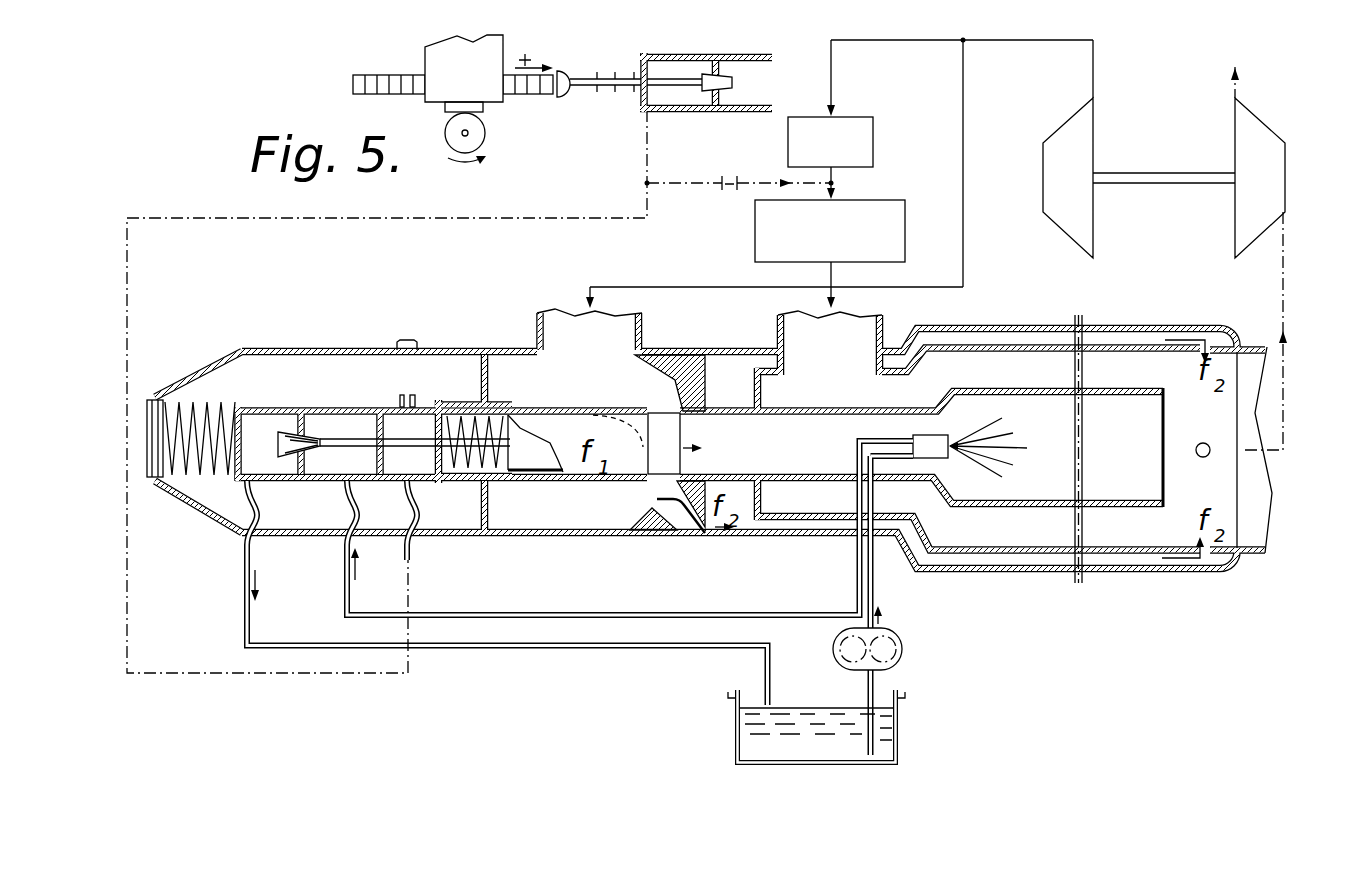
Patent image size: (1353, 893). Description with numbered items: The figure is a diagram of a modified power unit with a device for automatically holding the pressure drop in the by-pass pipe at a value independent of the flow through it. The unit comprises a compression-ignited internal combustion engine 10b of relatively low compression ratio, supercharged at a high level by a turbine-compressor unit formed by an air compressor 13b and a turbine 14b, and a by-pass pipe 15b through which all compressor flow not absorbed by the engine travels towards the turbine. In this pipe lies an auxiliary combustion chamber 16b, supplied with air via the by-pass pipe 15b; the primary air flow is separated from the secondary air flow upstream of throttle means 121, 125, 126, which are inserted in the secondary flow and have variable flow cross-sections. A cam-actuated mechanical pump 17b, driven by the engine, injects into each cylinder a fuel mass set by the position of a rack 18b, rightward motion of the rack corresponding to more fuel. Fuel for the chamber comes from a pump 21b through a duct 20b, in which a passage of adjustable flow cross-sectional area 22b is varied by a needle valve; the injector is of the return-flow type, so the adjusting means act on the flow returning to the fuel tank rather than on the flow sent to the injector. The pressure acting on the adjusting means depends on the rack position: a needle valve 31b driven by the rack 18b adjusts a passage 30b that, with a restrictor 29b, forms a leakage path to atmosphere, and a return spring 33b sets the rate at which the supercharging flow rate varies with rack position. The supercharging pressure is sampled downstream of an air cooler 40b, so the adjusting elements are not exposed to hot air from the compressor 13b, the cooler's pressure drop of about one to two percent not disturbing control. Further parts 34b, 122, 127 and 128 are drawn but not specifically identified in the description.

The rack 18b is at (379, 84).
The cam-actuated mechanical pump 17b is at (485, 89).
The needle valve 31b is at (575, 80).
The control shaft 34b is at (627, 92).
The passage 30b is at (718, 92).
The restrictor 29b is at (730, 176).
The air cooler 40b is at (862, 157).
The internal combustion engine 10b is at (855, 251).
The by-pass pipe 15b is at (965, 279).
The air compressor 13b is at (1092, 190).
The turbine 14b is at (1280, 190).
The return spring 33b is at (470, 418).
The flow cross-sectional area 22b is at (300, 450).
The throttle means 125 is at (706, 368).
The chamber 122 is at (602, 387).
The valve body 127 is at (652, 416).
The valve flap 128 is at (542, 478).
The throttle means 126 is at (628, 533).
The throttle means 121 is at (706, 531).
The duct 20b is at (818, 614).
The pump 21b is at (905, 655).
The auxiliary combustion chamber 16b is at (1054, 584).